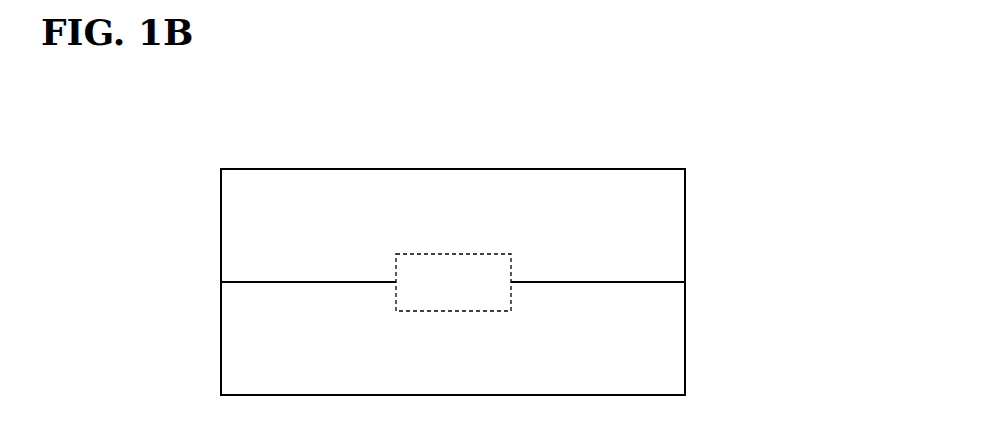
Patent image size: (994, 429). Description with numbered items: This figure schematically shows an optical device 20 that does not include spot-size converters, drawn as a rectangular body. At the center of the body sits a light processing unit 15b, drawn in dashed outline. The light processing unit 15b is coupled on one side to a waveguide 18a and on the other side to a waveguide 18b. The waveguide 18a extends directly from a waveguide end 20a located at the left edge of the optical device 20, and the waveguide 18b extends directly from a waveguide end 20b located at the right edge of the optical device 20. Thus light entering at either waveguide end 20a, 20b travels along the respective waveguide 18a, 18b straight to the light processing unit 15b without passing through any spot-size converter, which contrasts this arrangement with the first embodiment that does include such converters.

The optical device 20 is at (613, 146).
The waveguide end 20a is at (221, 282).
The waveguide end 20b is at (685, 282).
The light processing unit 15b is at (450, 253).
The waveguide 18a is at (317, 283).
The waveguide 18b is at (590, 283).